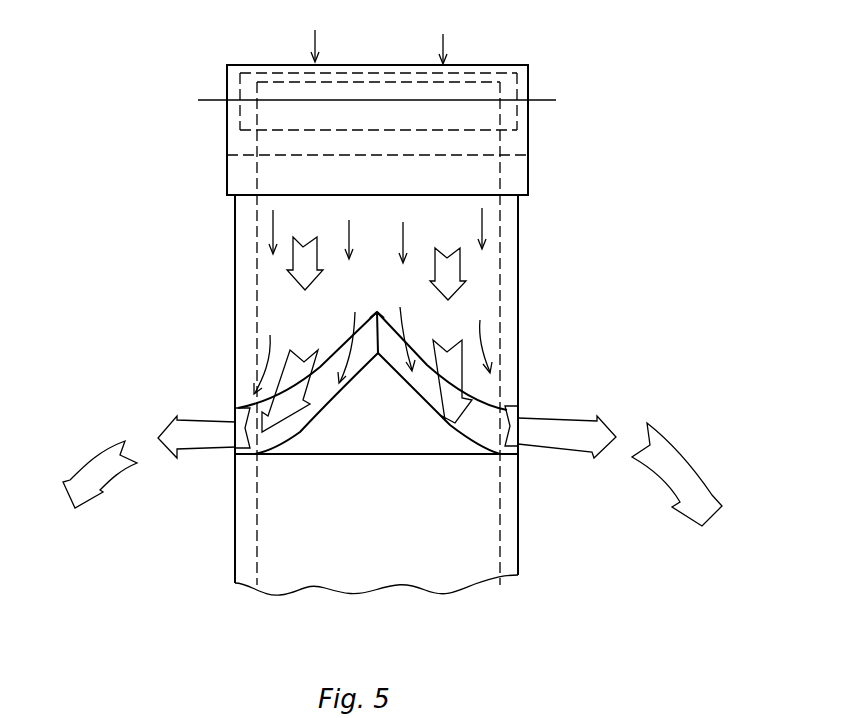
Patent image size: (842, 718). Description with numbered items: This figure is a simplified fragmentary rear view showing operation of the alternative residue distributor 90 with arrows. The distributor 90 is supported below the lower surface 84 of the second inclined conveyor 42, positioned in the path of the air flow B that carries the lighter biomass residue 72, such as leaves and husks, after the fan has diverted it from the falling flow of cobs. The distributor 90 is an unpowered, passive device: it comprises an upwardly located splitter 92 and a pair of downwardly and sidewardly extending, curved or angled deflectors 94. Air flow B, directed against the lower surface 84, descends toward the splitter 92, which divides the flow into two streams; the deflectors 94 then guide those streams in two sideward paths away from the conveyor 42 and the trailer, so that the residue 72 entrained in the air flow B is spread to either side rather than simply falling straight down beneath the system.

The second inclined conveyor 42 is at (237, 550).
The biomass residue 72 is at (297, 284).
The lower surface 84 is at (477, 545).
The residue distributor 90 is at (420, 412).
The splitter 92 is at (377, 312).
The deflectors 94 is at (247, 417).
The air flow B is at (440, 41).